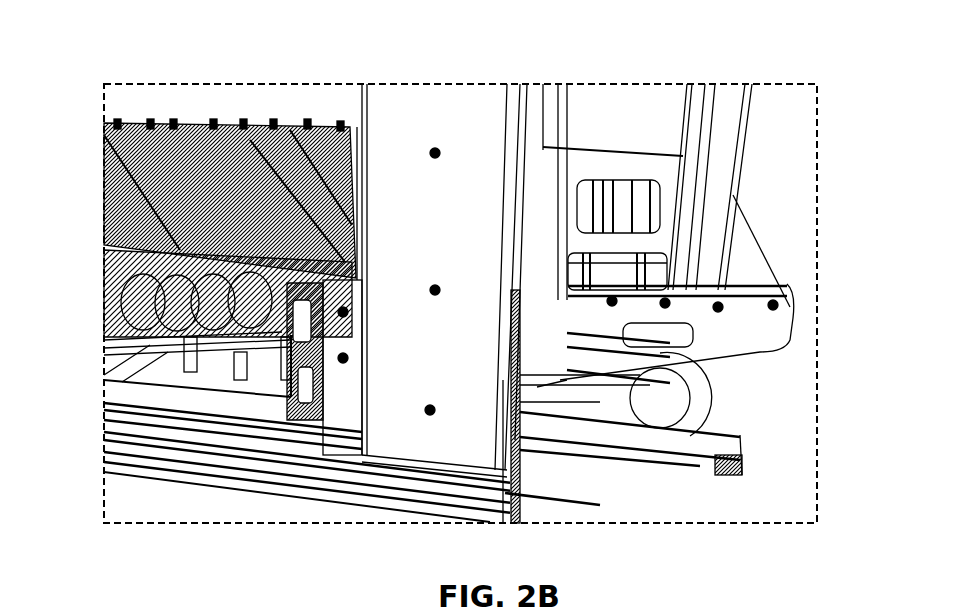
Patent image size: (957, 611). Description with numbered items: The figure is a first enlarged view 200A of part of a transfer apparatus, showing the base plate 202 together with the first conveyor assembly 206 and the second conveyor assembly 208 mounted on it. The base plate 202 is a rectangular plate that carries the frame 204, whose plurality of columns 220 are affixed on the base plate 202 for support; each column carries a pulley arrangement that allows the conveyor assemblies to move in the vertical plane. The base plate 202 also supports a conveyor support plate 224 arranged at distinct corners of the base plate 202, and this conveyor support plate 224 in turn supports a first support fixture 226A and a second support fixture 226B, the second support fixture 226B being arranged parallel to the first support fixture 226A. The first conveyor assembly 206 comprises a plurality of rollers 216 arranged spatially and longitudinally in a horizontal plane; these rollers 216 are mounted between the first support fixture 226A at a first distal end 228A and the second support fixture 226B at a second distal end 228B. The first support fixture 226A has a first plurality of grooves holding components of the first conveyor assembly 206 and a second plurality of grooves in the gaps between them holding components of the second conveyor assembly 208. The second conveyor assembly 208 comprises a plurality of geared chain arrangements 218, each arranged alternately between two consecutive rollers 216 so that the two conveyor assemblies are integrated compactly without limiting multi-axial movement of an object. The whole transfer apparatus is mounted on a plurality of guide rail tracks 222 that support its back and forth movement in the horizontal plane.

The first enlarged view 200A is at (818, 193).
The base plate 202 is at (265, 465).
The frame 204 is at (717, 195).
The first conveyor assembly 206 is at (145, 198).
The second conveyor assembly 208 is at (338, 208).
The plurality of rollers 216 is at (196, 170).
The plurality of geared chain arrangements 218 is at (223, 273).
The plurality of columns 220 is at (399, 193).
The plurality of guide rail tracks 222 is at (197, 473).
The conveyor support plate 224 is at (158, 420).
The first support fixture 226A is at (730, 333).
The second support fixture 226B is at (625, 195).
The first distal end 228A is at (178, 245).
The second distal end 228B is at (307, 145).